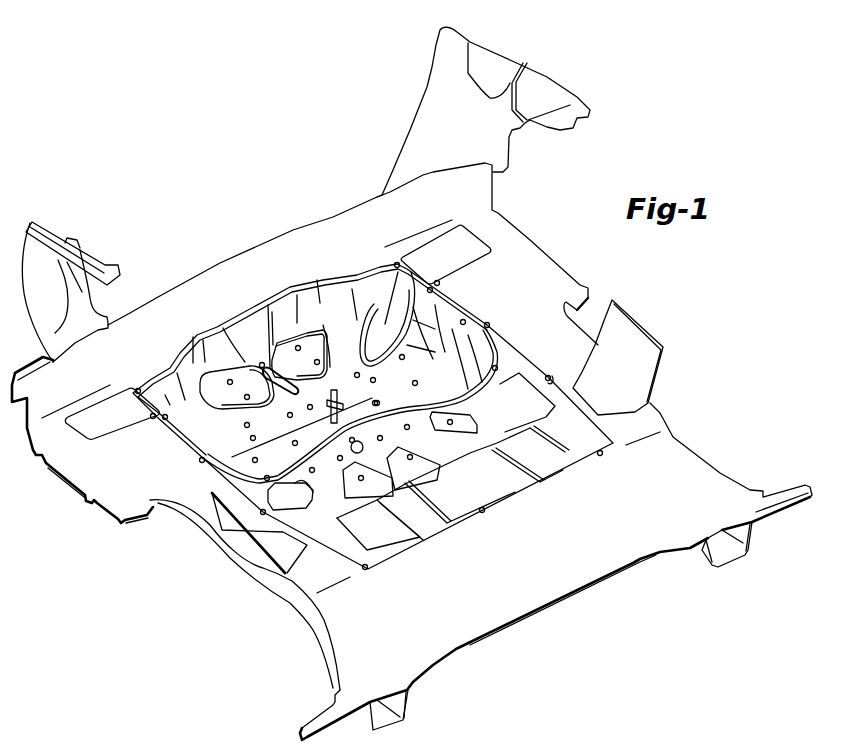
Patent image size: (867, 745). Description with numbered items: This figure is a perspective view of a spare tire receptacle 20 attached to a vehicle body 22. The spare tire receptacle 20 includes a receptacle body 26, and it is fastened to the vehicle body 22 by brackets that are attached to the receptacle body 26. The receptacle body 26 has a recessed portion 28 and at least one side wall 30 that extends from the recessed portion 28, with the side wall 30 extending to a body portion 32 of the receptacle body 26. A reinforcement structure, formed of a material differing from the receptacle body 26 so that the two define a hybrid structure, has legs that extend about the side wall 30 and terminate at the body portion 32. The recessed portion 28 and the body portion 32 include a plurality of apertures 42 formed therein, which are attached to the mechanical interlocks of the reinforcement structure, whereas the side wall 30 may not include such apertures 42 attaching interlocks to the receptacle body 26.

The spare tire receptacle 20 is at (661, 300).
The vehicle body 22 is at (720, 472).
The receptacle body 26 is at (318, 302).
The recessed portion 28 is at (283, 403).
The side wall 30 is at (193, 365).
The body portion 32 is at (350, 566).
The apertures 42 is at (415, 383).